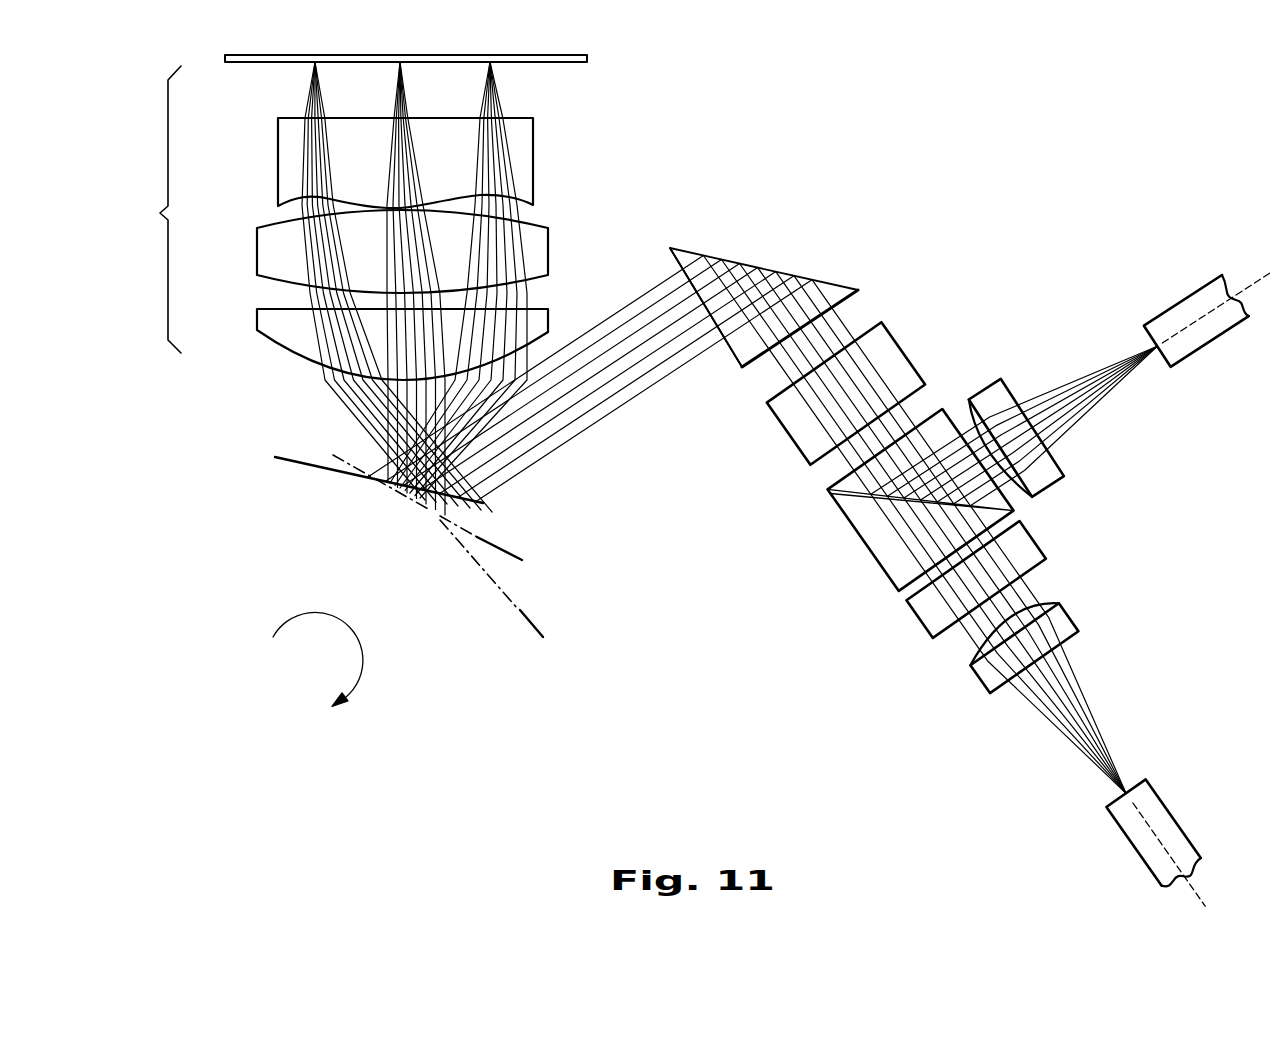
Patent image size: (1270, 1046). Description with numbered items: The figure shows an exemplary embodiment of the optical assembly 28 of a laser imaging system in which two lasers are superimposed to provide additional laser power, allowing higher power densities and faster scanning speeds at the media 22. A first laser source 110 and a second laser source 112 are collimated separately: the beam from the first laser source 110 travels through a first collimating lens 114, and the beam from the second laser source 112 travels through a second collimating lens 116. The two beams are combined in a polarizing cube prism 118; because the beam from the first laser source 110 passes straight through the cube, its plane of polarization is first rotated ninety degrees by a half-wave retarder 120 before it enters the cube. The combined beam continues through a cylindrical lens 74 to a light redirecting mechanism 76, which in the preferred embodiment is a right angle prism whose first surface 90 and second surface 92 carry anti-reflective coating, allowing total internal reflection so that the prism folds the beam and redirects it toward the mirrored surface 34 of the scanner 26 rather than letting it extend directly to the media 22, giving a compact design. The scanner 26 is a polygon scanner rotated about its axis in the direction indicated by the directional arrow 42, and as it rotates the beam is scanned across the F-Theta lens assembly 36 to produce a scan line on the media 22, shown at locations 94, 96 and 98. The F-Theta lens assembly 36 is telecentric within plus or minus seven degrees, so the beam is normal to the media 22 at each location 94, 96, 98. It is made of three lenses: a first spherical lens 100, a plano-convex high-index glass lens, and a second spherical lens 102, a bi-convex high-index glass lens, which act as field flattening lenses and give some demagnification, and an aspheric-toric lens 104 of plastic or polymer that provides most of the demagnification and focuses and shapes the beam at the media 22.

The media 22 is at (550, 62).
The scanner 26 is at (343, 547).
The optical assembly 28 is at (910, 212).
The mirrored surface 34 is at (288, 458).
The F-Theta lens assembly 36 is at (153, 209).
The directional arrow 42 is at (352, 643).
The cylindrical lens 74 is at (905, 352).
The light redirecting mechanism 76 is at (832, 278).
The first surface 90 is at (853, 296).
The second surface 92 is at (677, 263).
The location 94 is at (318, 88).
The location 96 is at (408, 88).
The location 98 is at (493, 88).
The first spherical lens 100 is at (277, 325).
The second spherical lens 102 is at (272, 248).
The aspheric-toric lens 104 is at (290, 155).
The first laser source 110 is at (1170, 834).
The second laser source 112 is at (1193, 307).
The first collimating lens 114 is at (1058, 606).
The second collimating lens 116 is at (1053, 486).
The polarizing cube prism 118 is at (876, 558).
The half-wave retarder 120 is at (921, 619).